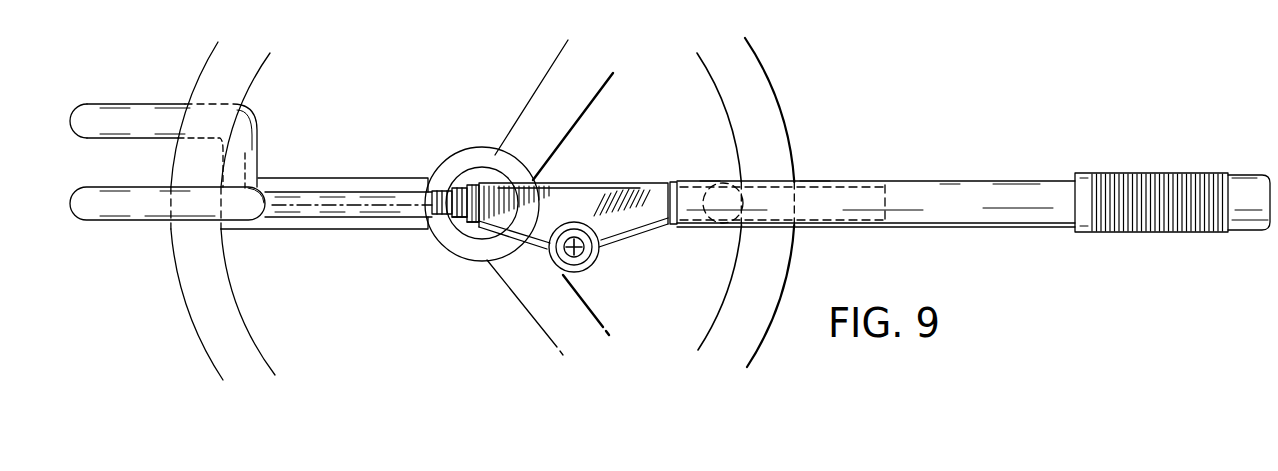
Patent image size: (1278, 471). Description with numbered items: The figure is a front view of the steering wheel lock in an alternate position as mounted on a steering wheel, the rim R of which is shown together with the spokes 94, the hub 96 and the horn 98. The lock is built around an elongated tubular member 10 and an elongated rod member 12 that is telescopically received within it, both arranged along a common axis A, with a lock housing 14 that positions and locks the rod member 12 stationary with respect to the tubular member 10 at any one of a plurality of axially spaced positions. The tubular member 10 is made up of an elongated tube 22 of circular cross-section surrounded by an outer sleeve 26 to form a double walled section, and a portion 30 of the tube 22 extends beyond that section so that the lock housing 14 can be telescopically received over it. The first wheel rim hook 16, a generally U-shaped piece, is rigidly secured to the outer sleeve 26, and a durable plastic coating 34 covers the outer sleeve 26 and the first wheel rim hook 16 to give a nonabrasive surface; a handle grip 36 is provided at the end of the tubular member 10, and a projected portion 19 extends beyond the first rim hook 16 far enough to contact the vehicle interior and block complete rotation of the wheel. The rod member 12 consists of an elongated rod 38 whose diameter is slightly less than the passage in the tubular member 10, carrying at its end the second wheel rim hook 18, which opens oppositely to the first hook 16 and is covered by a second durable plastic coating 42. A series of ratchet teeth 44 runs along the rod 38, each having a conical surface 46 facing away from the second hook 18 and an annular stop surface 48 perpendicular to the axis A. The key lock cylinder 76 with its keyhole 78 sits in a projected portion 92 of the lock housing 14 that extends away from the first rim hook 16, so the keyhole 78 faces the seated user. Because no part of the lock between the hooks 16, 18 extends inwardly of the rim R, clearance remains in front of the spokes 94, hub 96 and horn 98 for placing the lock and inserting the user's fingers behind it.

The elongated tubular member 10 is at (947, 166).
The elongated rod member 12 is at (382, 216).
The lock housing 14 is at (587, 180).
The first wheel rim hook 16 is at (820, 188).
The second wheel rim hook 18 is at (258, 130).
The projected portion 19 is at (1155, 168).
The elongated tube 22 is at (476, 226).
The outer sleeve 26 is at (673, 180).
The extended portion of the tube 30 is at (473, 192).
The durable plastic coating 34 is at (1040, 185).
The handle grip 36 is at (1233, 182).
The elongated rod 38 is at (308, 191).
The second durable plastic coating 42 is at (253, 222).
The ratchet teeth 44 is at (454, 224).
The conical surface 46 is at (442, 190).
The annular stop surface 48 is at (452, 190).
The key lock cylinder 76 is at (556, 257).
The keyhole 78 is at (580, 256).
The projected portion of the lock housing 92 is at (599, 260).
The steering wheel spokes 94 is at (345, 180).
The hub 96 is at (500, 150).
The horn 98 is at (491, 176).
The axis A is at (332, 207).
The steering wheel rim R is at (180, 292).